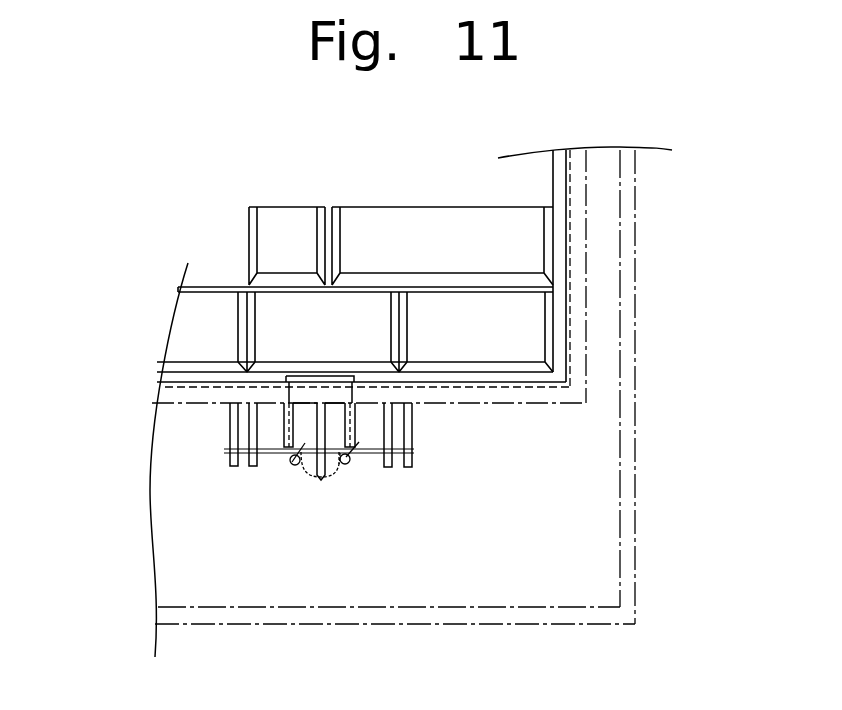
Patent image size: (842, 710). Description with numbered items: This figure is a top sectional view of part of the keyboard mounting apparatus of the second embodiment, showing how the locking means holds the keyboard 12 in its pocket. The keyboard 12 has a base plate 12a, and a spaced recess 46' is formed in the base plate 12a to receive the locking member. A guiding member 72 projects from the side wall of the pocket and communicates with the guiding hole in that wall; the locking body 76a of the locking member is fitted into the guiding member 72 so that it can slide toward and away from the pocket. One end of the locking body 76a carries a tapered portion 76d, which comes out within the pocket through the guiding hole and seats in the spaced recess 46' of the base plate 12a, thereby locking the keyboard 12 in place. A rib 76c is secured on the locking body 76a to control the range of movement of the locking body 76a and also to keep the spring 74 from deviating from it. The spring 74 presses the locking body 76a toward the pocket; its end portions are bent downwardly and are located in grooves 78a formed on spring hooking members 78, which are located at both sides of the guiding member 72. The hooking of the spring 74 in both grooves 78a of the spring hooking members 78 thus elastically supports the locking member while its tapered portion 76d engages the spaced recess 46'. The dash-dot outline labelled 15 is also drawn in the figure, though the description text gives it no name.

The keyboard 12 is at (526, 323).
The base plate 12a is at (563, 355).
The base chassis 15 is at (525, 588).
The spaced recess 46' is at (231, 394).
The guiding member 72 is at (358, 445).
The spring 74 is at (330, 478).
The locking body 76a is at (292, 467).
The rib 76c is at (320, 482).
The tapered portion 76d is at (350, 464).
The spring hooking members 78 is at (412, 427).
The grooves 78a is at (412, 450).